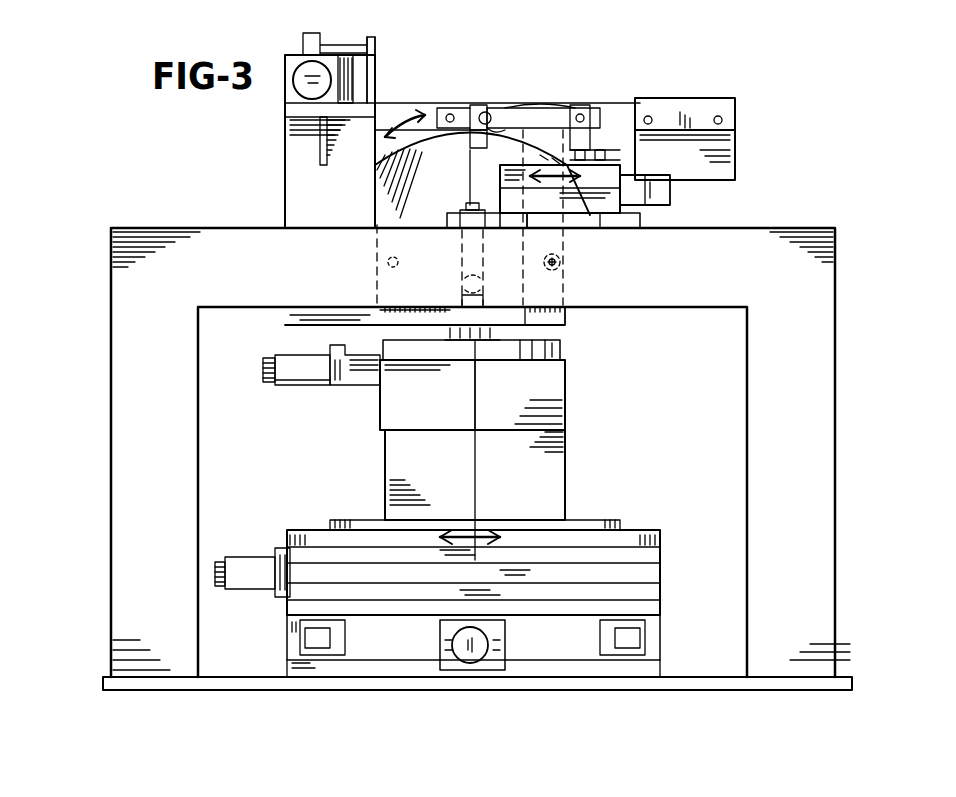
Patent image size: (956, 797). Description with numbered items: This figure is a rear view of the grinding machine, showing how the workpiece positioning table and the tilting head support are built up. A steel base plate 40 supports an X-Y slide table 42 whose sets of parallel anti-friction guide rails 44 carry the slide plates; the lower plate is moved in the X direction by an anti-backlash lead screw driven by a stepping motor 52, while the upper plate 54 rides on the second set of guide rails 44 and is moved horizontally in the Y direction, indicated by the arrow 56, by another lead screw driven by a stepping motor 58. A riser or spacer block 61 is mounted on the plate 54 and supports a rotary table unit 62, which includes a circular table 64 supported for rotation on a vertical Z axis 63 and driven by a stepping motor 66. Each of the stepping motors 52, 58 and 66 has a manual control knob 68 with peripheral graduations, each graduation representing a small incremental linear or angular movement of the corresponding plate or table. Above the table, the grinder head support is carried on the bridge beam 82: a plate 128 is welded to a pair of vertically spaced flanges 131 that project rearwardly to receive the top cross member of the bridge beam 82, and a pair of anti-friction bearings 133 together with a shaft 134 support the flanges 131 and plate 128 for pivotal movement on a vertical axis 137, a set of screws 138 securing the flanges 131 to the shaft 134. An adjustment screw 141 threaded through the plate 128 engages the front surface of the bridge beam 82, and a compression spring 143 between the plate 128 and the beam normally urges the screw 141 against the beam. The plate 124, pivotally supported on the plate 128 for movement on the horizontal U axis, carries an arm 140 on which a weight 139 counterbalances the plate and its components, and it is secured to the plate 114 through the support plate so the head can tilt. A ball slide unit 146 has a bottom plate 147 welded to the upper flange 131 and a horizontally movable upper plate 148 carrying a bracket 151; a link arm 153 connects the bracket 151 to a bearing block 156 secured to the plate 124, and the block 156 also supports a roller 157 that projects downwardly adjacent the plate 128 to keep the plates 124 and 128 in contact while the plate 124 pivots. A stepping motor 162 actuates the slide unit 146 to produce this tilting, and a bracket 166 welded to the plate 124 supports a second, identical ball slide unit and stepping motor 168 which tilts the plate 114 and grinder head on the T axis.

The steel base plate 40 is at (735, 682).
The X-Y slide table 42 is at (660, 582).
The anti-friction guide rails 44 is at (300, 642).
The stepping motor 52 is at (452, 645).
The plate 54 is at (355, 520).
The Y direction arrow 56 is at (470, 533).
The stepping motor 58 is at (250, 556).
The riser or spacer block 61 is at (558, 462).
The rotary table unit 62 is at (570, 388).
The vertical Z axis 63 is at (492, 408).
The circular table 64 is at (565, 350).
The stepping motor 66 is at (305, 383).
The manual control knob 68 is at (263, 367).
The bridge beam 82 is at (124, 347).
The plate 114 is at (376, 53).
The plate 124 is at (292, 178).
The plate 128 is at (378, 185).
The flanges 131 is at (447, 216).
The anti-friction bearings 133 is at (455, 235).
The shaft 134 is at (466, 286).
The vertical axis 137 is at (470, 163).
The screws 138 is at (468, 222).
The weight 139 is at (736, 144).
The arm 140 is at (666, 96).
The adjustment screw 141 is at (560, 262).
The compression spring 143 is at (388, 265).
The ball slide unit 146 is at (630, 216).
The bottom plate 147 is at (605, 225).
The upper plate 148 is at (610, 172).
The bracket 151 is at (598, 118).
The link arm 153 is at (534, 108).
The bearing block 156 is at (473, 103).
The roller 157 is at (437, 118).
The stepping motor 162 is at (658, 182).
The bracket 166 is at (320, 142).
The stepping motor 168 is at (298, 90).